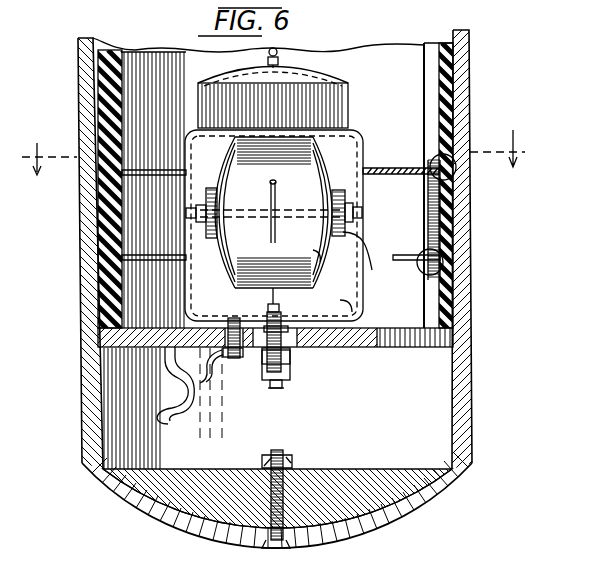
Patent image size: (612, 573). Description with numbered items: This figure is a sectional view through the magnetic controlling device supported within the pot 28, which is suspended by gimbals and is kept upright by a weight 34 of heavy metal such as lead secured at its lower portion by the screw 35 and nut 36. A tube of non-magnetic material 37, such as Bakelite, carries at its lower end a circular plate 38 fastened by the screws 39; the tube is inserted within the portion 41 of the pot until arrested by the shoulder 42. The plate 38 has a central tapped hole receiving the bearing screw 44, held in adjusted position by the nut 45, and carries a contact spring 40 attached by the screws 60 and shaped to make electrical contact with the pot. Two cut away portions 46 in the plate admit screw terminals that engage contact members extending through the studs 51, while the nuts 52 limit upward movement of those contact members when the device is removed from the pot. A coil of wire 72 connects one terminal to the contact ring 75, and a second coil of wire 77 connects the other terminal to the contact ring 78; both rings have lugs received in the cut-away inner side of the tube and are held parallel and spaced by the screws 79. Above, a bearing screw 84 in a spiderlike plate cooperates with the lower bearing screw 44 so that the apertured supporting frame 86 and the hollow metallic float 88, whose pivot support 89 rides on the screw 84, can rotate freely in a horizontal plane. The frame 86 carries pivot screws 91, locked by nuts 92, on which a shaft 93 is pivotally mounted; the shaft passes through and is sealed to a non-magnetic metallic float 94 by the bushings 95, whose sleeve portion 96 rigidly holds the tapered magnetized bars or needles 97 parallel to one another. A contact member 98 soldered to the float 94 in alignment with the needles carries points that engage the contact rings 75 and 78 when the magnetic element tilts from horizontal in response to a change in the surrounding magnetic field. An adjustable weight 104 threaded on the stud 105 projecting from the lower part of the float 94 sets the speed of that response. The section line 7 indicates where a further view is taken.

The section line 7- 7 is at (274, 152).
The pot 28 is at (473, 452).
The weight 34 is at (403, 486).
The screw 35 is at (247, 545).
The nut 36 is at (288, 456).
The tube of non-magnetic material 37 is at (98, 70).
The circular plate 38 is at (137, 337).
The screws 39 is at (233, 326).
The contact spring 40 is at (157, 403).
The portion of the pot 41 is at (450, 232).
The shoulder 42 is at (455, 345).
The bearing screw 44 is at (286, 360).
The nut 45 is at (287, 350).
The cut away portions 46 is at (233, 350).
The studs 51 is at (289, 378).
The nuts 52 is at (273, 387).
The screws 60 is at (216, 365).
The coil of wire 72 is at (100, 263).
The contact ring 75 is at (428, 282).
The coil of wire 77 is at (96, 180).
The contact ring 78 is at (403, 168).
The screws 79 is at (434, 254).
The bearing screw 84 is at (306, 50).
The apertured supporting frame 86 is at (357, 156).
The hollow metallic float 88 is at (325, 108).
The pivot support 89 is at (262, 57).
The pivot screws 91 is at (360, 207).
The nuts 92 is at (181, 222).
The shaft 93 is at (243, 197).
The non-magnetic metallic float 94 is at (258, 260).
The bushings 95 is at (372, 270).
The sleeve portion 96 is at (217, 221).
The tapered magnetized bars or needles 97 is at (353, 215).
The contact member 98 is at (318, 254).
The adjustable weight 104 is at (280, 300).
The stud 105 is at (352, 310).